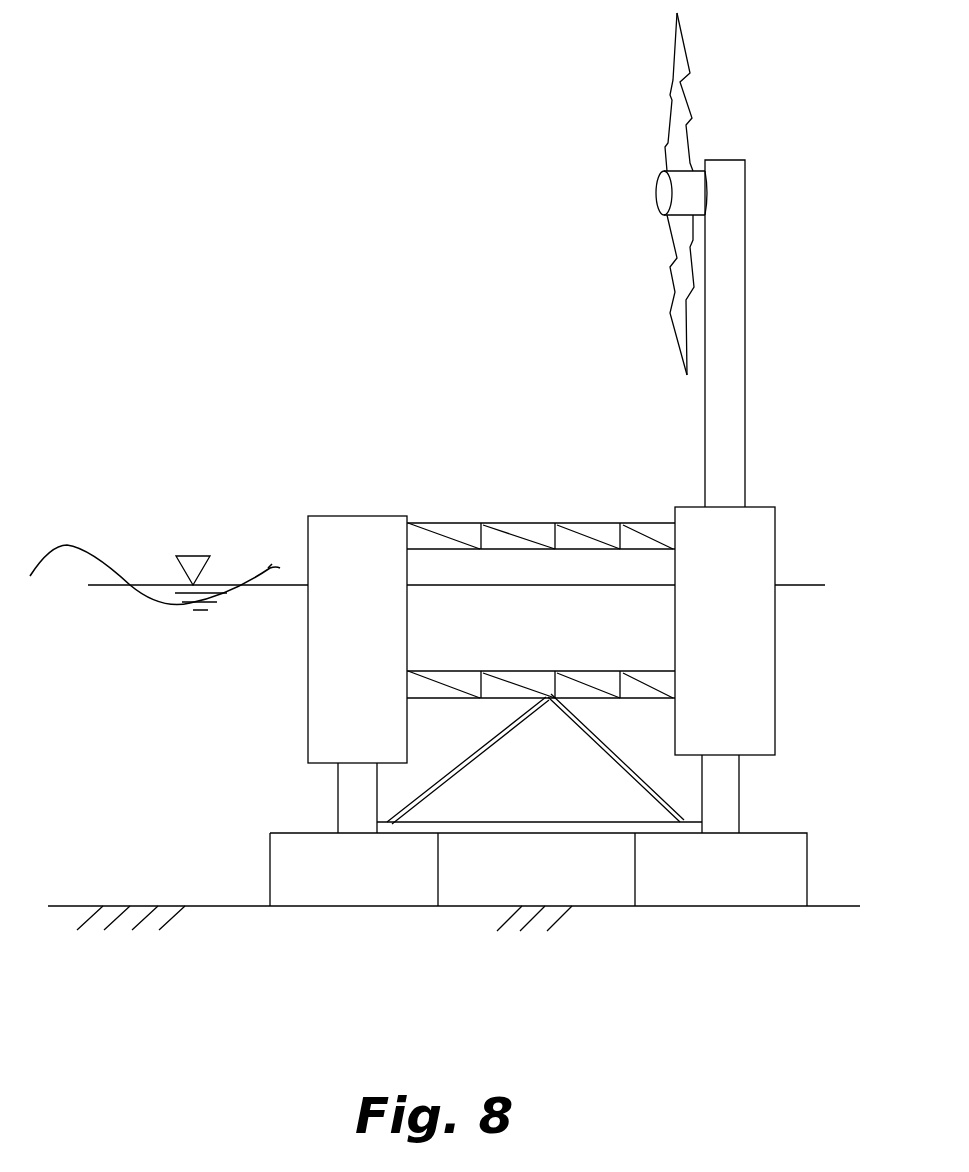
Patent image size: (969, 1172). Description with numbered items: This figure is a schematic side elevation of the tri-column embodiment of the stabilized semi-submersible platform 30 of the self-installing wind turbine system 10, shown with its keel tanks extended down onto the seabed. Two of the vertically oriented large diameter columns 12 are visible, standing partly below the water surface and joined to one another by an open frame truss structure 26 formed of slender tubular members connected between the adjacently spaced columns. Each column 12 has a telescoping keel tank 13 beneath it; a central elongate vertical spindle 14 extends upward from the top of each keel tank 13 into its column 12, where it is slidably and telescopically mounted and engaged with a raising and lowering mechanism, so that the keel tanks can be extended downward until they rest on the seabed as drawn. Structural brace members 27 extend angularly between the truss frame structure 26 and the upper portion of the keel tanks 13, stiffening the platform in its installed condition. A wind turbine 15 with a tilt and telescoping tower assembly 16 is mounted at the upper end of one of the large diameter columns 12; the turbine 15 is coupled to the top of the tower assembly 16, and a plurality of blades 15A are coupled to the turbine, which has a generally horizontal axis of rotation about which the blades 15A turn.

The self-installing wind turbine system 10 is at (433, 368).
The stabilized semi-submersible platform 30 is at (400, 455).
The large diameter column 12 is at (364, 645).
The keel tank 13 is at (368, 879).
The vertical spindle 14 is at (338, 793).
The wind turbine 15 is at (668, 192).
The blades 15A is at (672, 103).
The tilt and telescoping tower assembly 16 is at (745, 398).
The truss frame structure 26 is at (530, 523).
The structural brace members 27 is at (463, 768).